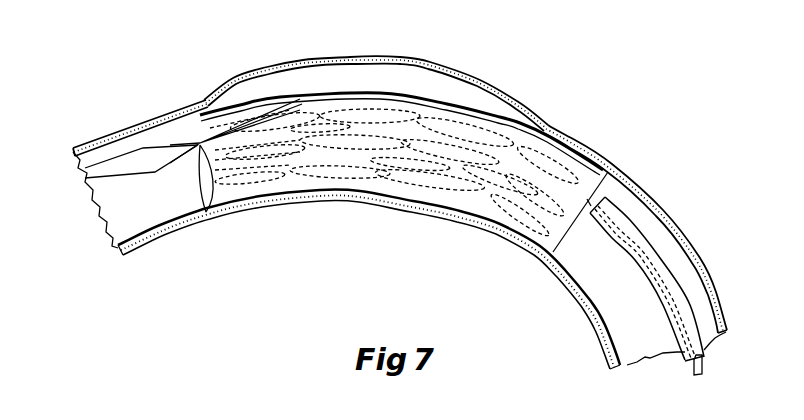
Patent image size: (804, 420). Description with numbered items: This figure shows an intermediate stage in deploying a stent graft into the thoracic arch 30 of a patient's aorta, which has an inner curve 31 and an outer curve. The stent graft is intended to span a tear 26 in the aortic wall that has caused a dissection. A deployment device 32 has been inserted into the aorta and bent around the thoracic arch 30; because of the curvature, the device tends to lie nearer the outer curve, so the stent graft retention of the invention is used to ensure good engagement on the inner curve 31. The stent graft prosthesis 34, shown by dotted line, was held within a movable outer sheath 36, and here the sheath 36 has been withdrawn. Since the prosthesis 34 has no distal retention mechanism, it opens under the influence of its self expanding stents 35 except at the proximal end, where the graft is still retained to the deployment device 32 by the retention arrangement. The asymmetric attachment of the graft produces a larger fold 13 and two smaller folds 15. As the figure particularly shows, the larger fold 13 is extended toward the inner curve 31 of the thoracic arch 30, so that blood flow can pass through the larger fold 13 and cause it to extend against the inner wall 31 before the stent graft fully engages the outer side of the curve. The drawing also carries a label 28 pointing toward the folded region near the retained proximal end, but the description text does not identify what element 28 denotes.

The larger fold 13 is at (202, 207).
The smaller folds 15 is at (200, 143).
The tear 26 is at (311, 95).
The notch 28 is at (183, 136).
The thoracic arch 30 is at (165, 208).
The inner curve 31 is at (252, 208).
The deployment device 32 is at (143, 160).
The stent graft prosthesis 34 is at (432, 170).
The self expanding stents 35 is at (358, 172).
The movable outer sheath 36 is at (618, 243).